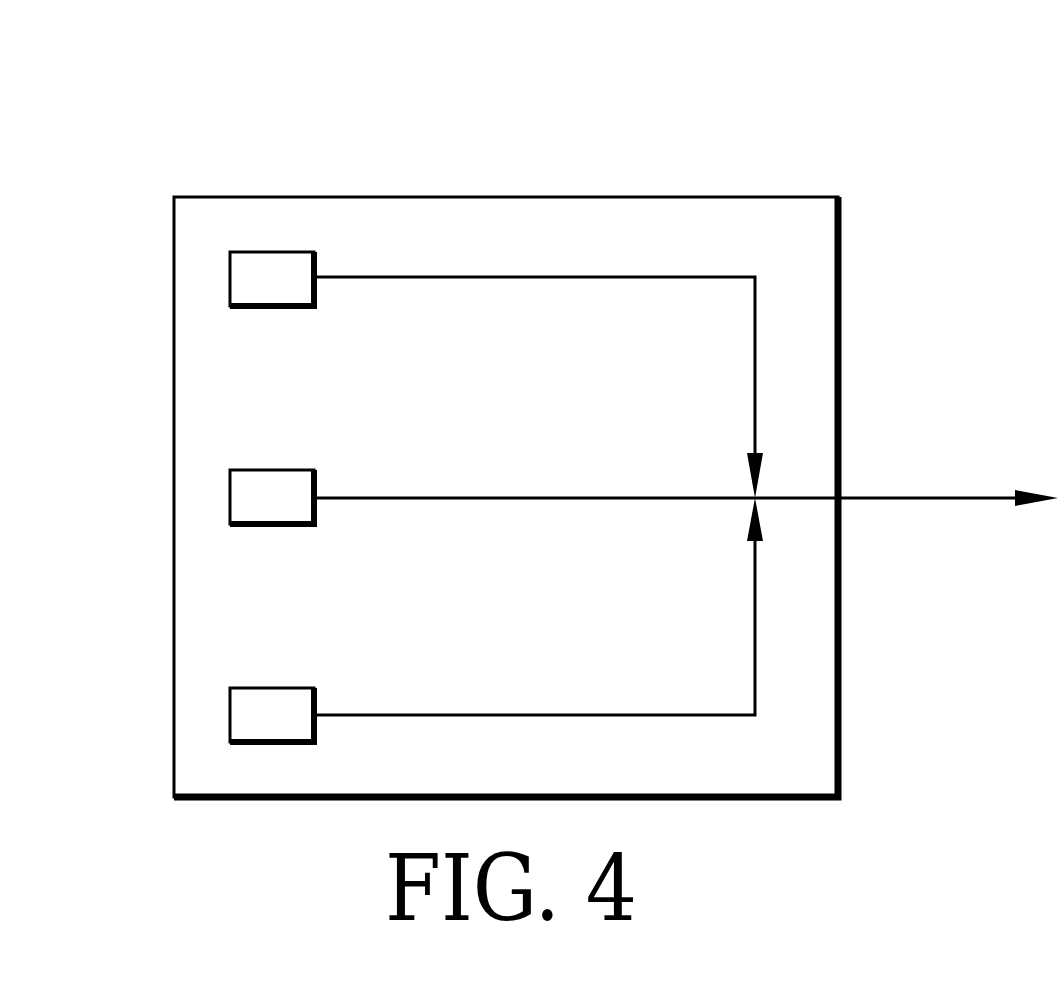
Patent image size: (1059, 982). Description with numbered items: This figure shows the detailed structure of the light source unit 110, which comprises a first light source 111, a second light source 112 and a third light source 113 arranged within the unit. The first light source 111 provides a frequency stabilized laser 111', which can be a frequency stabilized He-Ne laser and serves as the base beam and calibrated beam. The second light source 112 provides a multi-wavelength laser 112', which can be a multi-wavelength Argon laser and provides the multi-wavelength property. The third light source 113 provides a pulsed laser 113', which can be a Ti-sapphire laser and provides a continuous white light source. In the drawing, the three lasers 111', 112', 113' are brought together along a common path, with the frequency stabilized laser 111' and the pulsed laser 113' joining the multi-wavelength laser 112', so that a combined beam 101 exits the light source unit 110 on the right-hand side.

The light source unit 110 is at (135, 88).
The first light source 111 is at (174, 278).
The second light source 112 is at (174, 495).
The third light source 113 is at (174, 715).
The frequency stabilized laser 111' is at (539, 351).
The multi-wavelength laser 112' is at (576, 459).
The pulsed laser 113' is at (539, 606).
The combined output light beam 101 is at (893, 498).